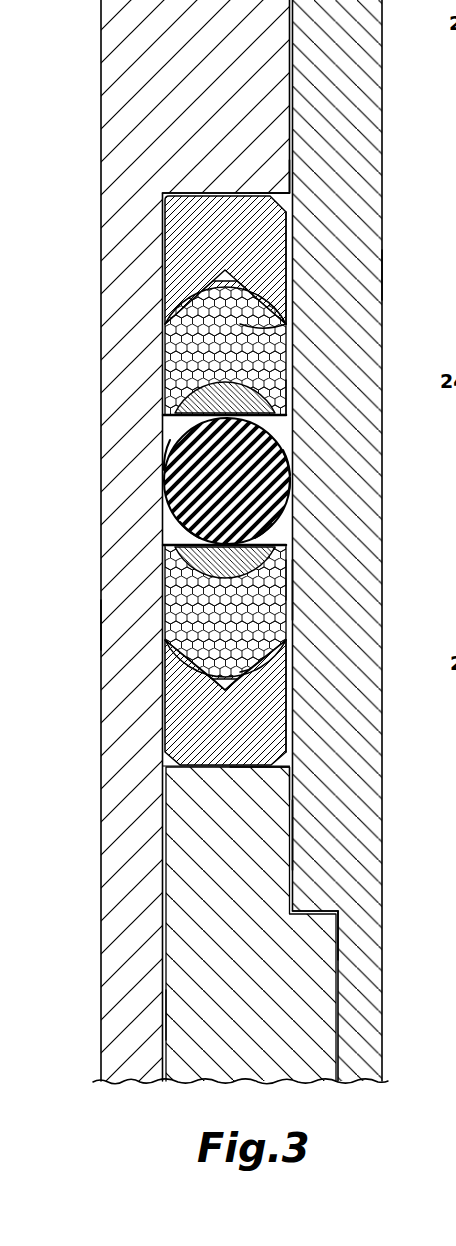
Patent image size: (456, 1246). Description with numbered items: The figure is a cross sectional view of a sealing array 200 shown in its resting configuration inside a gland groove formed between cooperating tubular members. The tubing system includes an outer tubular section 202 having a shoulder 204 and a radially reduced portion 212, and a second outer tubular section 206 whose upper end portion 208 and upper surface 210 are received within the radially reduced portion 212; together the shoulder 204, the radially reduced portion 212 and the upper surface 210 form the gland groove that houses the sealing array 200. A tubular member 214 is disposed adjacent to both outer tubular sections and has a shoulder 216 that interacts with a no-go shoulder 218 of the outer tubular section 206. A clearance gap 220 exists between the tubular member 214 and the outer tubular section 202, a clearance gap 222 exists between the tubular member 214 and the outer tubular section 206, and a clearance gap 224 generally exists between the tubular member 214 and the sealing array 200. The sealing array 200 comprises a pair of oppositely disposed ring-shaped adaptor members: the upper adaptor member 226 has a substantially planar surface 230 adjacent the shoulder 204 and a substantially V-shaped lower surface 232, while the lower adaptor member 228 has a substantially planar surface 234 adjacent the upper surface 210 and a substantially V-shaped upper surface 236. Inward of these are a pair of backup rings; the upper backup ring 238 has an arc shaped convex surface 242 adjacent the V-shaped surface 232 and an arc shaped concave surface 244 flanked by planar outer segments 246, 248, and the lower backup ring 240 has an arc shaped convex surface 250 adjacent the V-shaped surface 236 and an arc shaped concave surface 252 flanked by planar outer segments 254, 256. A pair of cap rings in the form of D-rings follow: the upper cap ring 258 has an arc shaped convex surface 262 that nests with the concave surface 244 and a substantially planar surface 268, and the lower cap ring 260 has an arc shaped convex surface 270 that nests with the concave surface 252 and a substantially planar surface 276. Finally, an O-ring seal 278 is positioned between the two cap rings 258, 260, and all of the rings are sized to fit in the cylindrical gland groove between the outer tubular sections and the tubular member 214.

The sealing array 200 is at (292, 247).
The outer tubular section 202 is at (112, 63).
The shoulder 204 is at (198, 192).
The outer tubular section 206 is at (180, 1005).
The upper end portion 208 is at (180, 917).
The upper surface 210 is at (200, 768).
The radially reduced portion 212 is at (115, 618).
The tubular member 214 is at (372, 272).
The shoulder 216 is at (320, 908).
The no-go shoulder 218 is at (305, 915).
The clearance gap 220 is at (291, 80).
The clearance gap 222 is at (292, 832).
The clearance gap 224 is at (292, 590).
The upper adaptor member 226 is at (175, 243).
The lower adaptor member 228 is at (180, 719).
The substantially planar surface 230 is at (255, 192).
The substantially V-shaped lower surface 232 is at (240, 290).
The substantially planar surface 234 is at (253, 770).
The substantially V-shaped upper surface 236 is at (245, 655).
The upper backup ring 238 is at (173, 355).
The lower backup ring 240 is at (165, 636).
The substantially arc shaped convex surface 242 is at (210, 279).
The substantially arc shaped concave surface 244 is at (193, 388).
The substantially planar outer segment 246 is at (163, 410).
The substantially planar outer segment 248 is at (276, 417).
The substantially arc shaped convex surface 250 is at (200, 678).
The substantially arc shaped concave surface 252 is at (170, 588).
The substantially planar outer segment 254 is at (197, 560).
The substantially planar outer segment 256 is at (284, 584).
The upper cap ring 258 is at (162, 460).
The lower cap ring 260 is at (187, 542).
The substantially arc shaped convex surface 262 is at (166, 434).
The substantially planar surface 268 is at (293, 440).
The substantially arc shaped convex surface 270 is at (286, 547).
The substantially planar surface 276 is at (272, 543).
The O-ring seal 278 is at (288, 466).